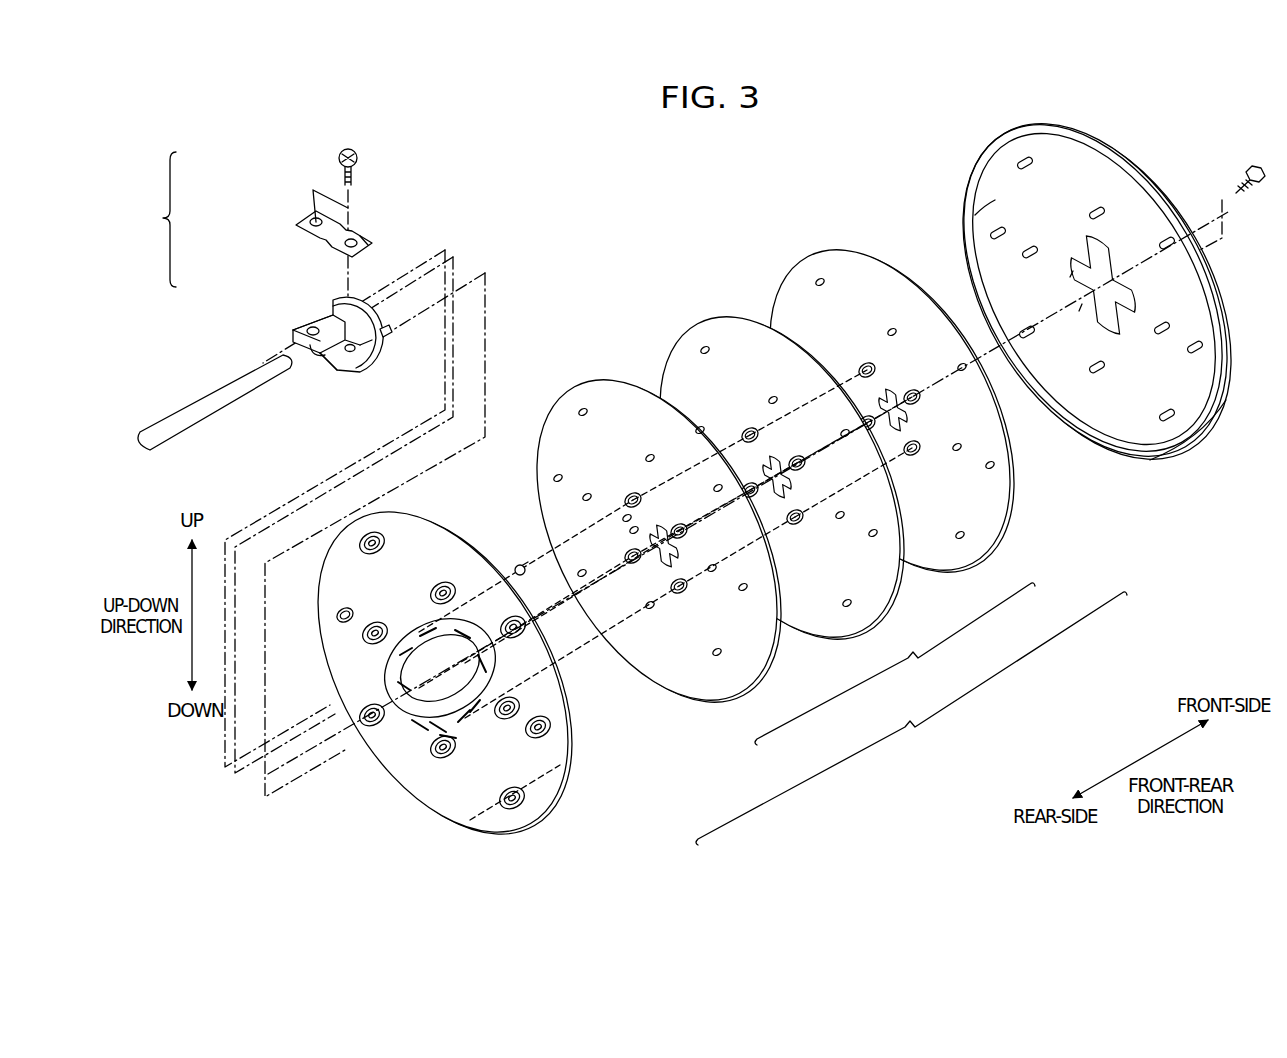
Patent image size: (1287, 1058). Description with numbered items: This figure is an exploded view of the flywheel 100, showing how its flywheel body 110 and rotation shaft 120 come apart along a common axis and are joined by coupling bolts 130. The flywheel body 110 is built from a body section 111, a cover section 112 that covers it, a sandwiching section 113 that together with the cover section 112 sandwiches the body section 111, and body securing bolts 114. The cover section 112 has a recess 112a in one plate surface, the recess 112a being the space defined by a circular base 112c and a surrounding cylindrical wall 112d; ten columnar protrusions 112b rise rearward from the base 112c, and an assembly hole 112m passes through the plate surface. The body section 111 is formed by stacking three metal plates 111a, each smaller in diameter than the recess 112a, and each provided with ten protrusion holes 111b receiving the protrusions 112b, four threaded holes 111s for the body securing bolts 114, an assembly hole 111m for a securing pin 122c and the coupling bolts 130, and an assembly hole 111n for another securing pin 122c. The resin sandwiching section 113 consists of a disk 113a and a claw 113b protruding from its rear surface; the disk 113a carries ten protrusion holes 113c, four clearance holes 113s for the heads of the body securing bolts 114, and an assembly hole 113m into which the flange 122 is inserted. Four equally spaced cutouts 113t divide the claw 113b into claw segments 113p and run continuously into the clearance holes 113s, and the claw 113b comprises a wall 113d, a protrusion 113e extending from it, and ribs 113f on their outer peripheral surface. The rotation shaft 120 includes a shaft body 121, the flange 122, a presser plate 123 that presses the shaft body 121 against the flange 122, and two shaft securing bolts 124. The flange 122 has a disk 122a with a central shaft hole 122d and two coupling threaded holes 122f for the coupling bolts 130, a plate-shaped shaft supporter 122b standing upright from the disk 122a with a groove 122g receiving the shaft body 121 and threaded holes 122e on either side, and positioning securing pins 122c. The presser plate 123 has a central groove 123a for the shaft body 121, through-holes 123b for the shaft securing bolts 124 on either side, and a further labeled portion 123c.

The flywheel 100 is at (634, 217).
The flywheel body 110 is at (748, 528).
The body section 111 is at (836, 477).
The metal plate 111a is at (588, 382).
The protrusion hole 111b is at (580, 412).
The assembly hole 111m is at (648, 528).
The assembly hole 111n is at (628, 528).
The threaded hole 111s is at (627, 492).
The cover section 112 is at (1118, 470).
The recess 112a is at (1105, 187).
The protrusion 112b is at (1018, 164).
The base 112c is at (988, 210).
The cylindrical wall 112d is at (1222, 383).
The assembly hole 112m is at (1070, 270).
The sandwiching section 113 is at (575, 796).
The disk 113a is at (395, 670).
The claw 113b is at (412, 727).
The protrusion hole 113c is at (436, 588).
The wall 113d is at (467, 727).
The protrusion 113e is at (427, 723).
The rib 113f is at (340, 617).
The assembly hole 113m is at (413, 673).
The claw segment 113p is at (427, 743).
The clearance hole 113s is at (478, 645).
The cutout 113t is at (487, 660).
The body securing bolt 114 is at (600, 672).
The rotation shaft 120 is at (148, 219).
The shaft body 121 is at (193, 404).
The flange 122 is at (323, 303).
The disk 122a is at (367, 357).
The shaft supporter 122b is at (360, 370).
The positioning securing pin 122c is at (387, 333).
The shaft hole 122d is at (340, 363).
The threaded hole 122e is at (297, 322).
The coupling threaded hole 122f is at (345, 317).
The groove 122g is at (298, 347).
The presser plate 123 is at (305, 228).
The groove 123a is at (318, 228).
The through-hole 123b is at (367, 240).
The bracket pad 123c is at (357, 232).
The shaft securing bolt 124 is at (338, 158).
The coupling bolt 130 is at (1251, 192).